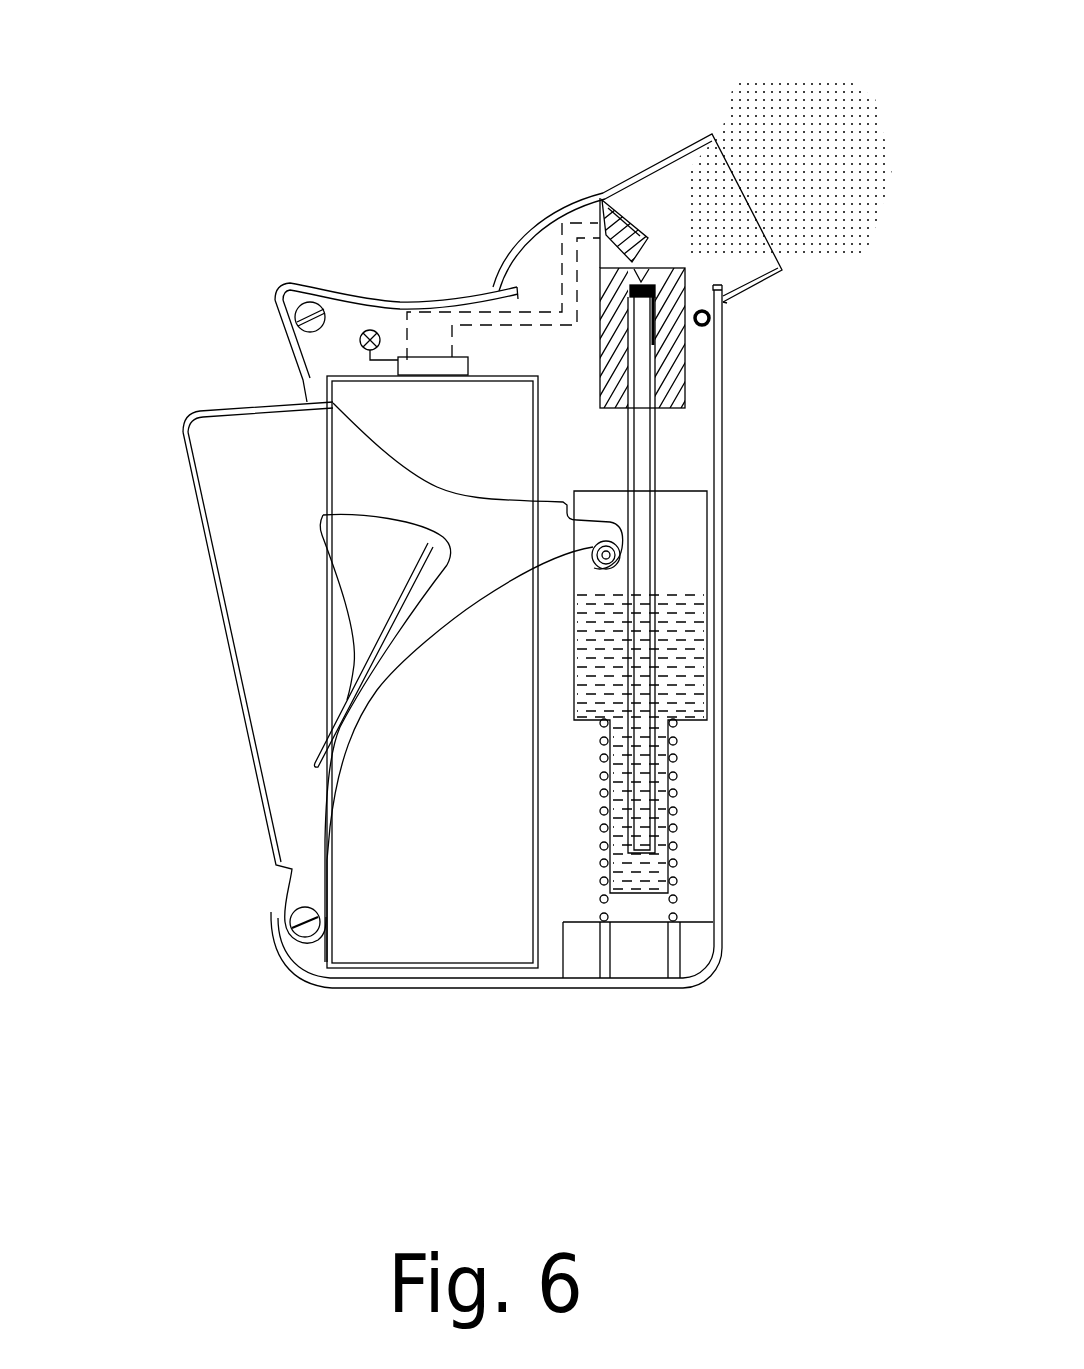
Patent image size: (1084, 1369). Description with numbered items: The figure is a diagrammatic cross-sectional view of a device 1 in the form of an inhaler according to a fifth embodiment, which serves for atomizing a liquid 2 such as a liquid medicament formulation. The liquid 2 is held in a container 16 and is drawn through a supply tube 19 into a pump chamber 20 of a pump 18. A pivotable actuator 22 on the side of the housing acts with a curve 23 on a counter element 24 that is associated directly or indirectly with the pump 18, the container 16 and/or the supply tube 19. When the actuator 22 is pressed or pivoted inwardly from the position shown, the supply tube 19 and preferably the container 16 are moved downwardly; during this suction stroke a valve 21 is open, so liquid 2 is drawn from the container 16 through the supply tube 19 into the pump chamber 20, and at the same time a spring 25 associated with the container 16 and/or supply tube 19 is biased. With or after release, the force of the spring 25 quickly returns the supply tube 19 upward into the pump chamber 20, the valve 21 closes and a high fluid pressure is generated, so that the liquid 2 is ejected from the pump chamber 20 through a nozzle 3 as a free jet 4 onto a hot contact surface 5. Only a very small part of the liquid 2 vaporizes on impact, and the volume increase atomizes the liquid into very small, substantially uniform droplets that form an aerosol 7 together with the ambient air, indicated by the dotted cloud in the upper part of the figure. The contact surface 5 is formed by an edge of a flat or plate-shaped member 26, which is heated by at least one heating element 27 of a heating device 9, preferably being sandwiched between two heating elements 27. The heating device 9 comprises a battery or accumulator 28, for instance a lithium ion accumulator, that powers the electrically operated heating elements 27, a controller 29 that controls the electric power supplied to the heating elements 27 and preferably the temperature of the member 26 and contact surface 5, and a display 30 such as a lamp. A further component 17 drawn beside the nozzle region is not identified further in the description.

The device 1 is at (305, 181).
The liquid 2 is at (673, 653).
The nozzle 3 is at (727, 297).
The jet 4 is at (782, 270).
The contact surface 5 is at (687, 253).
The aerosol 7 is at (687, 218).
The heating device 9 is at (664, 210).
The container 16 is at (707, 607).
The seal ring 17 is at (725, 297).
The pump 18 is at (675, 418).
The supply tube 19 is at (656, 476).
The pump chamber 20 is at (647, 280).
The valve 21 is at (682, 363).
The actuator 22 is at (227, 525).
The curve 23 is at (440, 620).
The counter element 24 is at (577, 577).
The spring 25 is at (677, 792).
The member 26 is at (603, 200).
The heating element 27 is at (608, 240).
The battery or accumulator 28 is at (388, 857).
The controller 29 is at (427, 367).
The display 30 is at (366, 331).